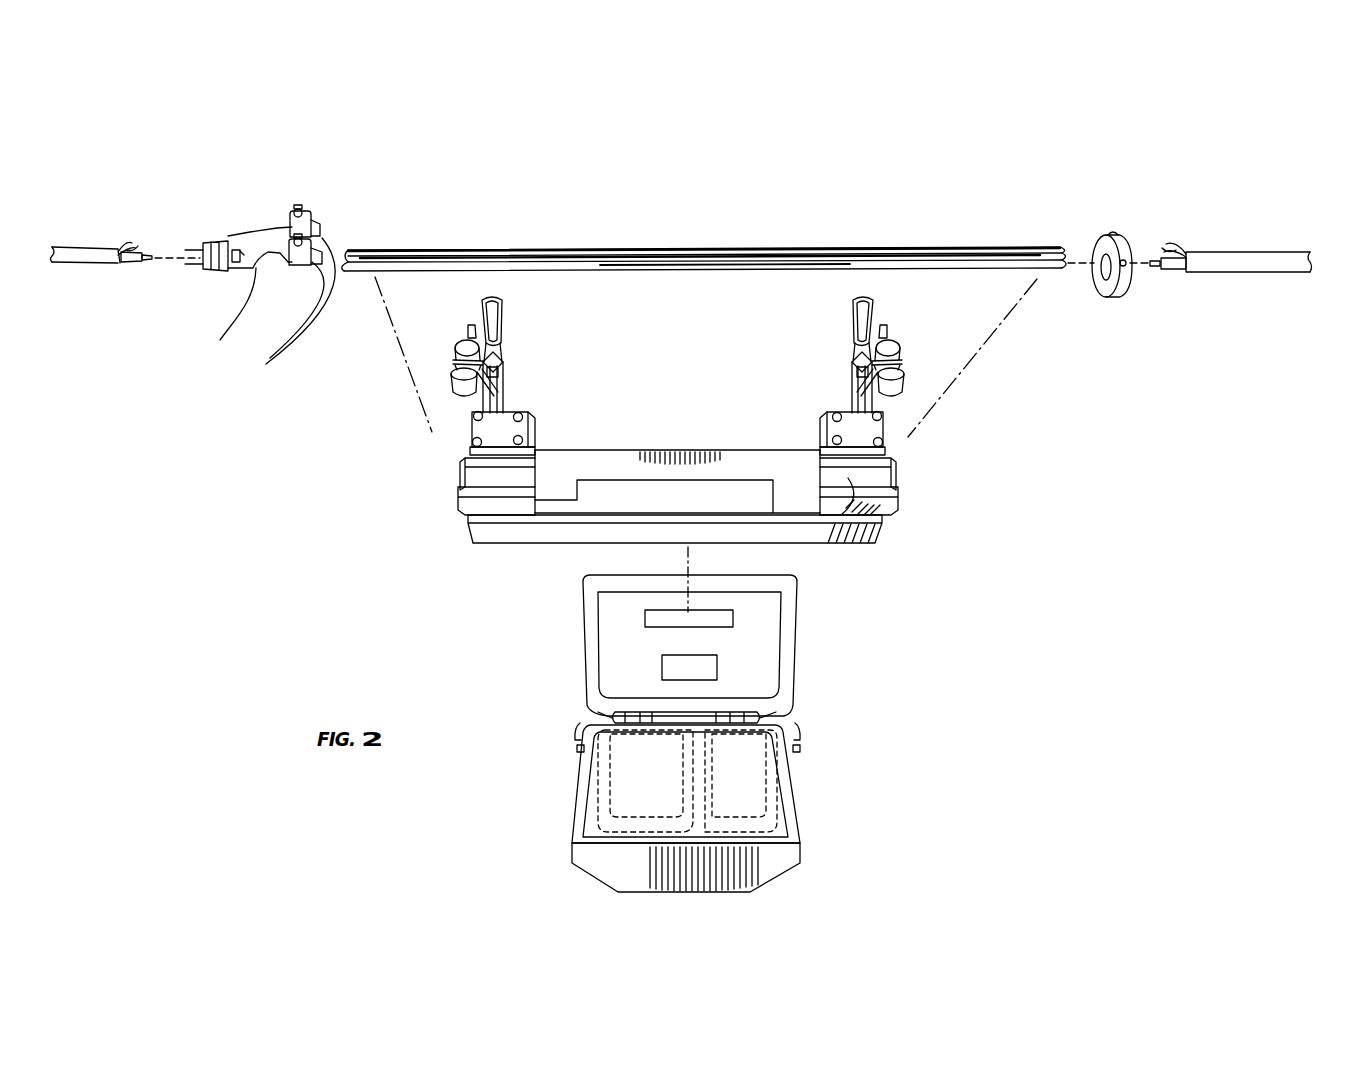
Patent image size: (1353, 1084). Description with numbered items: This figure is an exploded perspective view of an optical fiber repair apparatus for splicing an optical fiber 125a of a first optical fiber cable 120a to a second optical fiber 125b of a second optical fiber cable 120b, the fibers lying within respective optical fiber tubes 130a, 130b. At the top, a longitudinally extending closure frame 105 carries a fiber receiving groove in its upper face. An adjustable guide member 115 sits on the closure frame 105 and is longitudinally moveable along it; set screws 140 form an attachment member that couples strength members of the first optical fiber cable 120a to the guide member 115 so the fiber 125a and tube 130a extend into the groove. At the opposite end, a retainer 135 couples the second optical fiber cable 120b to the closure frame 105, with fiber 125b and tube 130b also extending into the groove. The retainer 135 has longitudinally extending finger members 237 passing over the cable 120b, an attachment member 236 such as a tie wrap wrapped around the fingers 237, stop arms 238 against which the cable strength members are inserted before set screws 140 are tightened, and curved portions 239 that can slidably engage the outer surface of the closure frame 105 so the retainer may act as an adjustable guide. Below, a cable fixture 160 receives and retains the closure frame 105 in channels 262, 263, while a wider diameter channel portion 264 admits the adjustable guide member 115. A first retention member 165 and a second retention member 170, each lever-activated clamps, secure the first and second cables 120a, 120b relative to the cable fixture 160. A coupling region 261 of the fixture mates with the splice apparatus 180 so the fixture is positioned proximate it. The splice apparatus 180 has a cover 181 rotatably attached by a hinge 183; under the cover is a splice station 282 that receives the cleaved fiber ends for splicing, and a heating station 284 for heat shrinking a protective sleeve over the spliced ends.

The closure frame 105 is at (758, 252).
The adjustable guide member 115 is at (1128, 252).
The first optical fiber cable 120a is at (1242, 272).
The second optical fiber cable 120b is at (65, 263).
The optical fiber 125a is at (1156, 267).
The second optical fiber 125b is at (150, 261).
The optical fiber tube 130a is at (1175, 270).
The optical fiber tube 130b is at (125, 264).
The retainer 135 is at (270, 232).
The set screws 140 is at (318, 241).
The cable fixture 160 is at (693, 528).
The first retention member 165 is at (836, 379).
The second retention member 170 is at (536, 386).
The splice apparatus 180 is at (695, 679).
The cover 181 is at (800, 805).
The hinge 183 is at (597, 721).
The attachment member 236 is at (222, 236).
The finger members 237 is at (194, 258).
The stop arms 238 is at (288, 317).
The curved portions 239 is at (225, 320).
The coupling region 261 is at (585, 524).
The channel 262 is at (463, 478).
The channel 263 is at (848, 486).
The wider diameter channel portion 264 is at (887, 478).
The splice station 282 is at (717, 675).
The heating station 284 is at (733, 620).